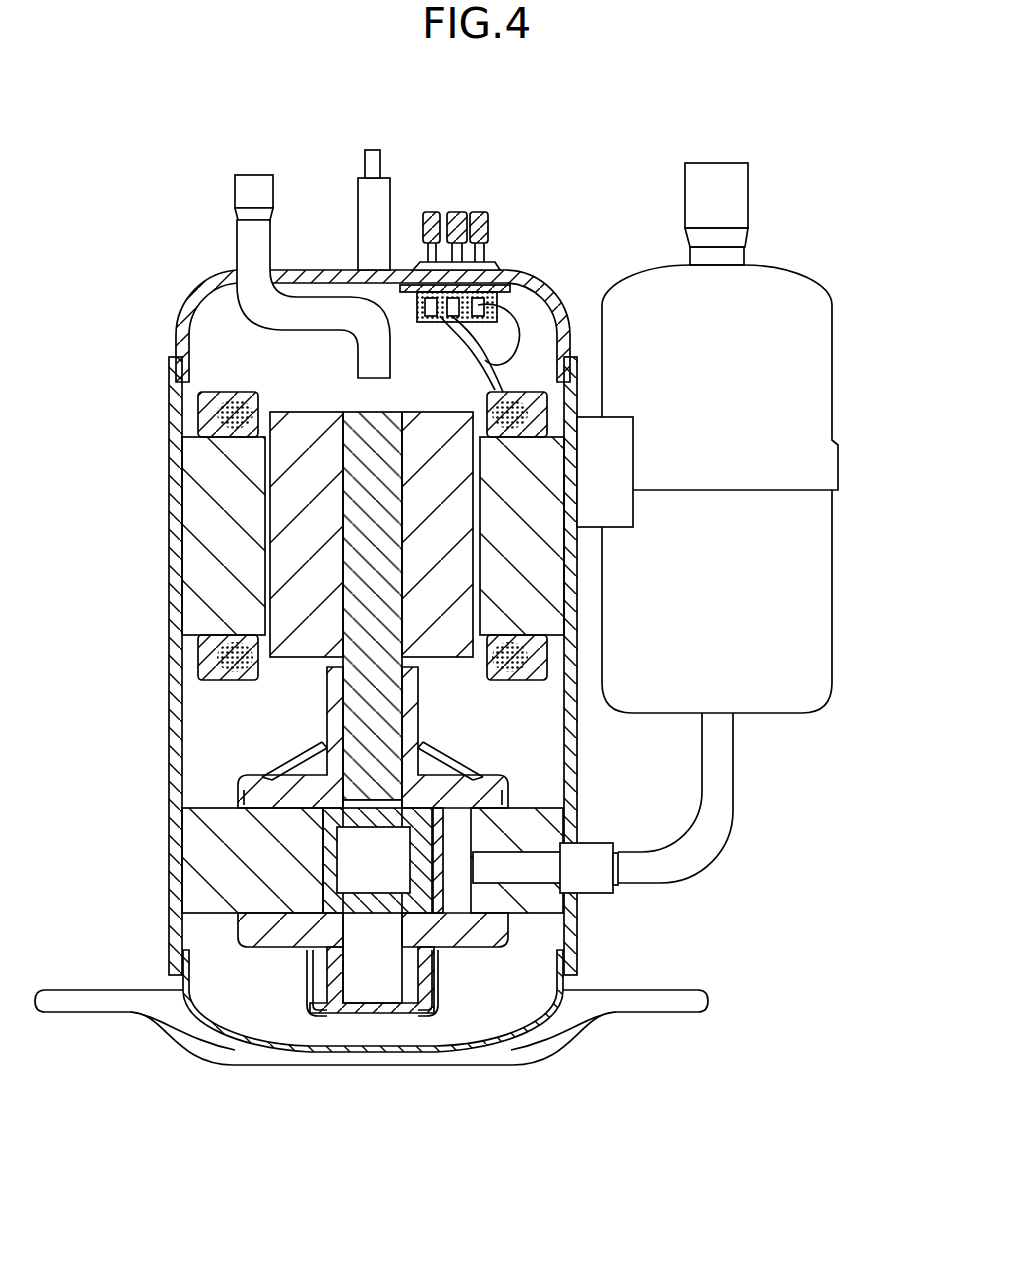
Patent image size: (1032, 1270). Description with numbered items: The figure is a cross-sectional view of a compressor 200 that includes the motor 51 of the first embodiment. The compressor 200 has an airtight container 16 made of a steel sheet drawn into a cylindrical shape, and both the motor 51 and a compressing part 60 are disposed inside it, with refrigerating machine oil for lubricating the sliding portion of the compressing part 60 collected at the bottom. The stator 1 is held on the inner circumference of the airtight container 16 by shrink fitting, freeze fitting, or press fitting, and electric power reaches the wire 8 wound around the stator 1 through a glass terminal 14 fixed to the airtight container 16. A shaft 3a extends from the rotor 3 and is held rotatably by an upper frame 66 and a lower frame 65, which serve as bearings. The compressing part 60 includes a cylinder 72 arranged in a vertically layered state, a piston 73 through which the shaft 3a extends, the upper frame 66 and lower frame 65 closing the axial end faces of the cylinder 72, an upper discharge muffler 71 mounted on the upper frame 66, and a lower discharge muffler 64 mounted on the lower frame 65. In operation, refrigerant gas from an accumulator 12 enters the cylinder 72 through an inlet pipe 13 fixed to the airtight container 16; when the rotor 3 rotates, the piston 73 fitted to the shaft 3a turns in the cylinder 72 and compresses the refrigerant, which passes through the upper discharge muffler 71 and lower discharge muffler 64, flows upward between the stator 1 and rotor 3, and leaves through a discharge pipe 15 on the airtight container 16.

The compressor 200 is at (445, 575).
The airtight container 16 is at (190, 300).
The discharge pipe 15 is at (238, 237).
The glass terminal 14 is at (463, 212).
The accumulator 12 is at (832, 408).
The inlet pipe 13 is at (712, 845).
The motor 51 is at (481, 536).
The stator 1 is at (550, 647).
The rotor 3 is at (420, 578).
The wire 8 is at (535, 660).
The shaft 3a is at (367, 698).
The compressing part 60 is at (365, 901).
The upper discharge muffler 71 is at (307, 760).
The upper frame 66 is at (498, 792).
The cylinder 72 is at (203, 803).
The piston 73 is at (330, 863).
The lower frame 65 is at (460, 945).
The lower discharge muffler 64 is at (312, 970).